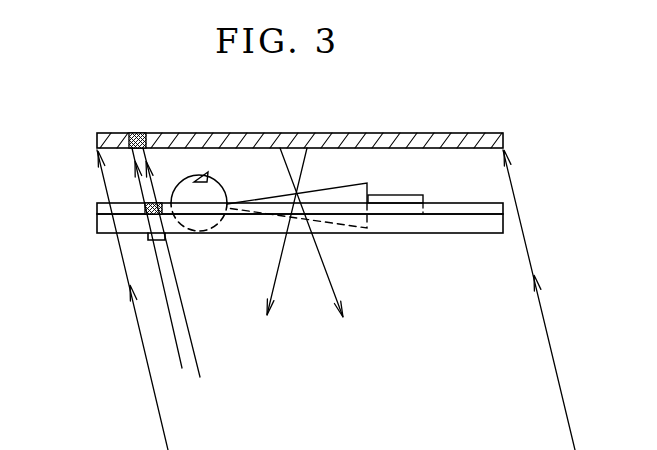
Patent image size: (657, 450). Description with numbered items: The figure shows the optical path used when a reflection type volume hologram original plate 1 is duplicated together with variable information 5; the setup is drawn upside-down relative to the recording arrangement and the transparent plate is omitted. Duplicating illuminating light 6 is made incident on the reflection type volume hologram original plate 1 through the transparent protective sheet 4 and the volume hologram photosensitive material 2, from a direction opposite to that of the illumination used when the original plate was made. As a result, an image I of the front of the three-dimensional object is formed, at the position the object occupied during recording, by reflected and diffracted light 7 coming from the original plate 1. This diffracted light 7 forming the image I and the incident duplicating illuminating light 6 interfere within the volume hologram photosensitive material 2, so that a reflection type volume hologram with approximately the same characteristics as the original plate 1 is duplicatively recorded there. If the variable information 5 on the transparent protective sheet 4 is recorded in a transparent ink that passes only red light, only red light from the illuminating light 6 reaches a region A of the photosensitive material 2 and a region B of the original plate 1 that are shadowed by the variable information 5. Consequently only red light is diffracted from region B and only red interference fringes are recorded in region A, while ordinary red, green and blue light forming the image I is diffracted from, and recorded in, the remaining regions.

The reflection type volume hologram original plate 1 is at (503, 140).
The volume hologram photosensitive material 2 is at (97, 205).
The transparent protective sheet 4 is at (97, 226).
The variable information 5 is at (162, 240).
The duplicating illuminating light 6 is at (550, 342).
The reflected and diffracted light 7 is at (345, 327).
The region of the volume hologram photosensitive material A is at (145, 203).
The region of the reflection type volume hologram original plate B is at (135, 132).
The image I is at (357, 182).